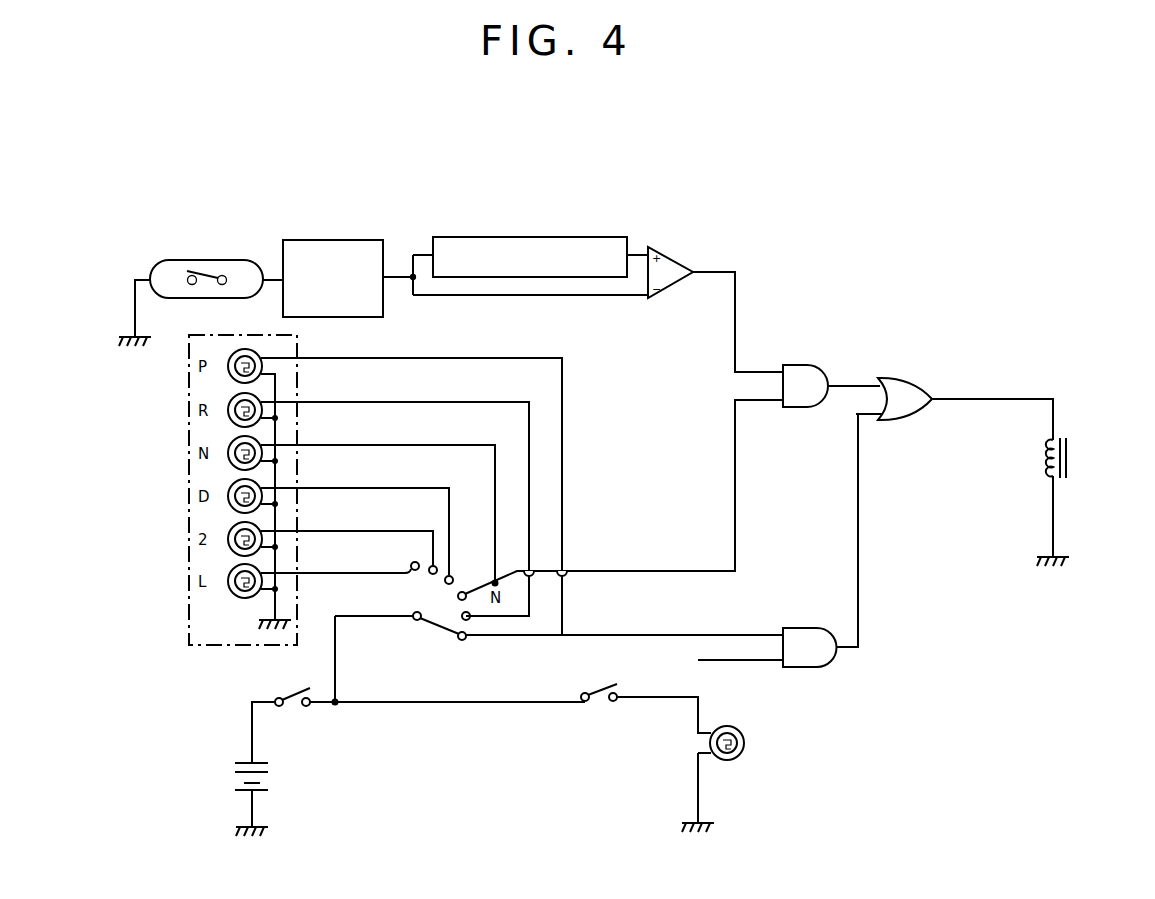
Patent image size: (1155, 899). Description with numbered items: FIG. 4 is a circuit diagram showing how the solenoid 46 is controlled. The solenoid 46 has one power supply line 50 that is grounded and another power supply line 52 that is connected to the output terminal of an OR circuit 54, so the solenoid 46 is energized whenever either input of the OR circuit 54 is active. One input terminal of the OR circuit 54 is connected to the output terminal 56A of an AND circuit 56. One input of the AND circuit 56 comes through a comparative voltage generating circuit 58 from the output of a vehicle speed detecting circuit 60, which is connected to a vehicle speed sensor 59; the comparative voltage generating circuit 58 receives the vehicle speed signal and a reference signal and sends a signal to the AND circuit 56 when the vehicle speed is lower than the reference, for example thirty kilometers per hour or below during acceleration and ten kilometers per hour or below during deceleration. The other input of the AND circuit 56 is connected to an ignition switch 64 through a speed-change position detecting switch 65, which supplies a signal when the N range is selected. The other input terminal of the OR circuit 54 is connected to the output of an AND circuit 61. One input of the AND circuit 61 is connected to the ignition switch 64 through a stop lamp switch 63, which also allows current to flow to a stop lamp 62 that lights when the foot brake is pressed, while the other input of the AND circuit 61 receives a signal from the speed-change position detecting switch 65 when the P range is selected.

The solenoid 46 is at (1068, 455).
The power supply line 50 is at (1053, 516).
The power supply line 52 is at (1012, 398).
The OR circuit 54 is at (901, 377).
The AND circuit 56 is at (807, 365).
The output terminal 56A is at (838, 380).
The comparative voltage generating circuit 58 is at (514, 237).
The vehicle speed sensor 59 is at (212, 258).
The vehicle speed detecting circuit 60 is at (335, 240).
The AND circuit 61 is at (815, 667).
The stop lamp 62 is at (745, 741).
The stop lamp switch 63 is at (603, 711).
The ignition switch 64 is at (302, 710).
The speed-change position detecting switch 65 is at (425, 635).